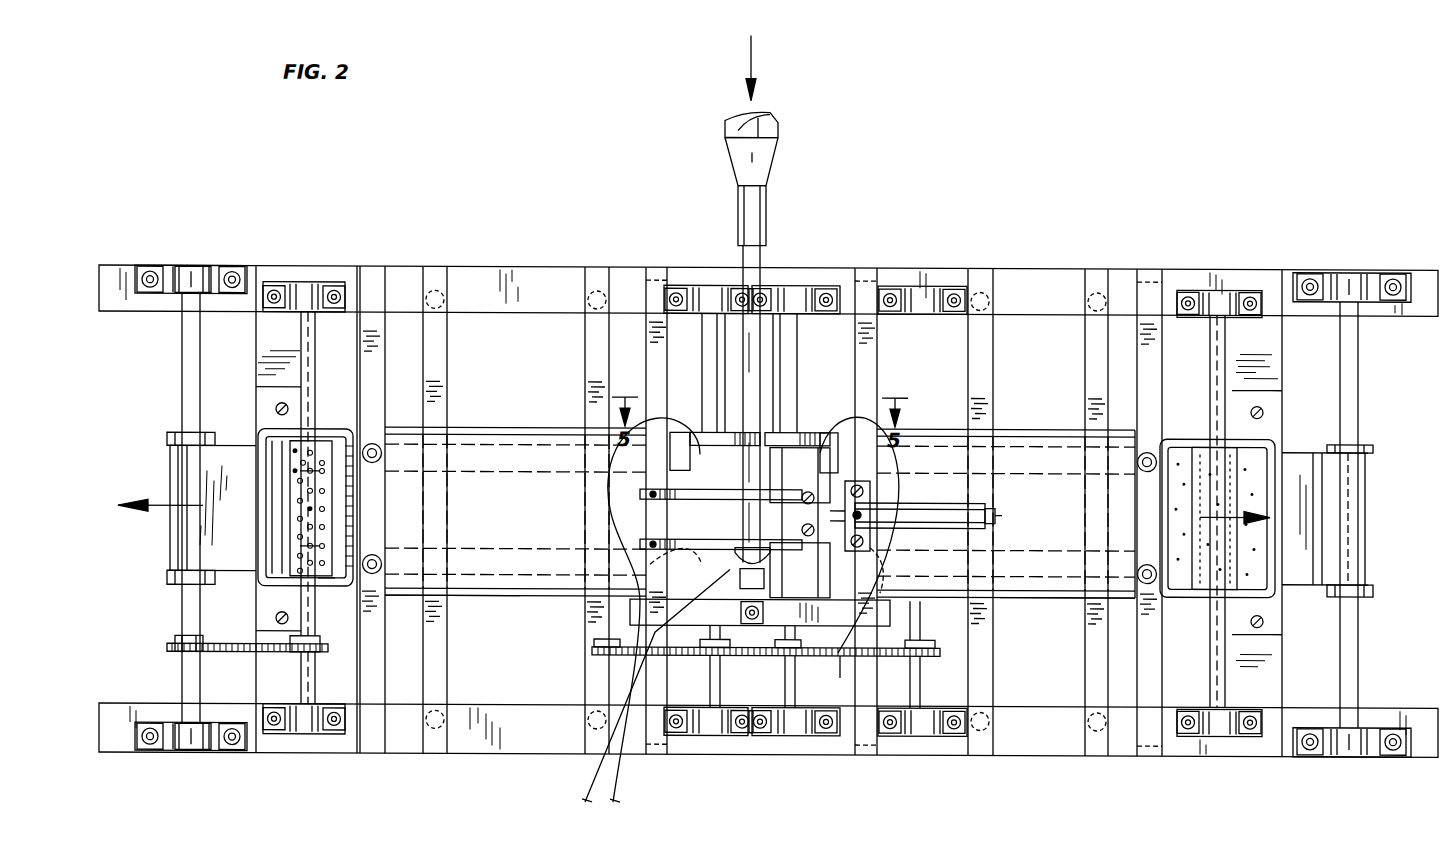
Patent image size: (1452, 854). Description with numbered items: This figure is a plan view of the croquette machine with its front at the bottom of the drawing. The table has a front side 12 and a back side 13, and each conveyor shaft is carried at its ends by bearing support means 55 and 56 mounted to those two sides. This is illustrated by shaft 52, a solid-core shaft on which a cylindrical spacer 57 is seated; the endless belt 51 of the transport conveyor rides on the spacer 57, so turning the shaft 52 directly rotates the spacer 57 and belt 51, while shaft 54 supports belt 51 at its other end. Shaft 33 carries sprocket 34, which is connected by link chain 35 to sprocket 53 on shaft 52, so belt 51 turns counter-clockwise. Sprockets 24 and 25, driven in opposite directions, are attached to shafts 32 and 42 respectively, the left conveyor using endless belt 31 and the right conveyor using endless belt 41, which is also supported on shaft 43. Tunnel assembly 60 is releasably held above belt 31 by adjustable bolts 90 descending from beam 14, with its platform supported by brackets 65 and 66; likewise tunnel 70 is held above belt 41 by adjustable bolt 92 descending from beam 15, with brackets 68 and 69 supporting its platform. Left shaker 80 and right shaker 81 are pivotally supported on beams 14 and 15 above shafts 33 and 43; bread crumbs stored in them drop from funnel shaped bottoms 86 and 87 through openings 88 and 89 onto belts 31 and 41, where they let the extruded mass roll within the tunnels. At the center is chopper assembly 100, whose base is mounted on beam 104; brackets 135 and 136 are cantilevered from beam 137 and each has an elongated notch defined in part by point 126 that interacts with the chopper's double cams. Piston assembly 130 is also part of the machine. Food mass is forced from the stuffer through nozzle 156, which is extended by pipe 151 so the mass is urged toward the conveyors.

The front side 12 is at (520, 760).
The back side 13 is at (542, 265).
The beam 14 is at (380, 374).
The beam 15 is at (1153, 356).
The sprocket 24 is at (596, 650).
The sprocket 25 is at (795, 656).
The endless belt 31 is at (513, 467).
The shaft 32 is at (708, 374).
The shaft 33 is at (310, 372).
The sprocket 34 is at (322, 645).
The link chain 35 is at (246, 643).
The endless belt 41 is at (1040, 475).
The shaft 42 is at (797, 374).
The shaft 43 is at (1210, 376).
The endless belt 51 is at (171, 466).
The shaft 52 is at (182, 346).
The sprocket 53 is at (176, 643).
The shaft 54 is at (1359, 388).
The bearing support means 55 is at (191, 752).
The bearing support means 56 is at (192, 265).
The cylindrical spacer 57 is at (168, 434).
The tunnel assembly 60 is at (491, 600).
The bracket 65 is at (449, 378).
The bracket 66 is at (586, 374).
The bracket 68 is at (1086, 388).
The bracket 69 is at (994, 380).
The tunnel 70 is at (1044, 604).
The left shaker 80 is at (267, 432).
The right shaker 81 is at (1271, 448).
The bottom 86 is at (330, 580).
The bottom 87 is at (1262, 582).
The opening 88 is at (322, 446).
The opening 89 is at (1202, 594).
The adjustable bolts 90 is at (381, 560).
The adjustable bolt 92 is at (1151, 450).
The chopper assembly 100 is at (808, 422).
The beam 104 is at (742, 386).
The point 126 is at (790, 486).
The piston assembly 130 is at (918, 492).
The bracket 135 is at (650, 538).
The bracket 136 is at (646, 492).
The beam 137 is at (659, 266).
The pipe 151 is at (760, 262).
The nozzle 156 is at (772, 172).